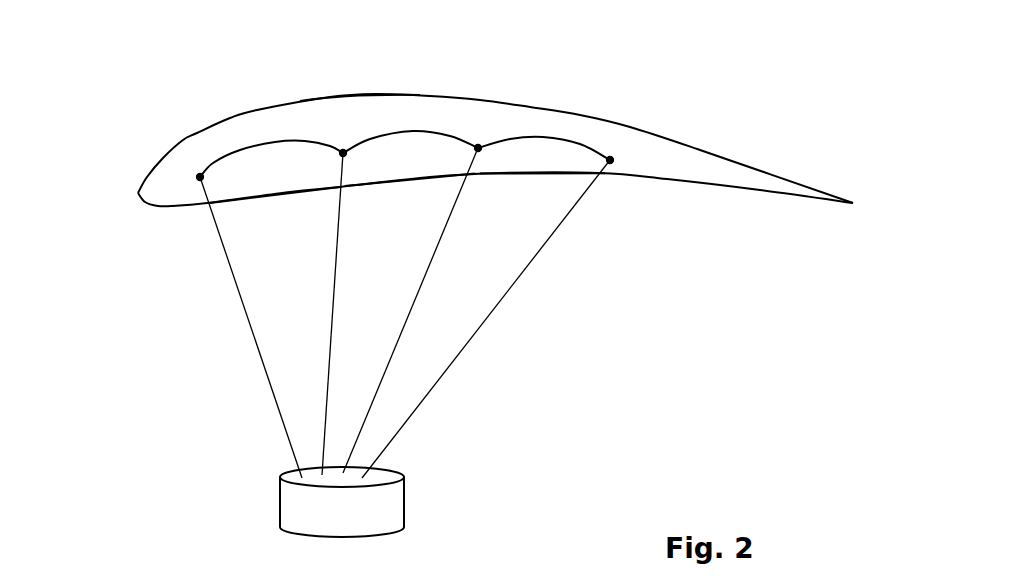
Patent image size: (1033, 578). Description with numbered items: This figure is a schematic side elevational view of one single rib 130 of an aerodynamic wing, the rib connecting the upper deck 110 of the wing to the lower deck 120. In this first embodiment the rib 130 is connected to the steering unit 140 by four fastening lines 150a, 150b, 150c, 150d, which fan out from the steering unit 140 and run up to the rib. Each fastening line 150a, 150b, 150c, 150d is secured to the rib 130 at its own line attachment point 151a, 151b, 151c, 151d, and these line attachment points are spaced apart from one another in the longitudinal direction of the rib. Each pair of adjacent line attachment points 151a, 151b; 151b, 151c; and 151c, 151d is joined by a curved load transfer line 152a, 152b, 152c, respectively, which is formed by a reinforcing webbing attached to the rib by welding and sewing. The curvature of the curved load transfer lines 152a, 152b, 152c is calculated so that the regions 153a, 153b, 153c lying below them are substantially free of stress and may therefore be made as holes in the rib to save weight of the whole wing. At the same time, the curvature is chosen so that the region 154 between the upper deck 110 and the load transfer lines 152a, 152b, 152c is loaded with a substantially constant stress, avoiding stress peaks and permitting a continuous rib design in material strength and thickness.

The upper deck 110 is at (668, 137).
The lower deck 120 is at (655, 180).
The rib 130 is at (463, 176).
The steering unit 140 is at (388, 507).
The fastening line 150a is at (247, 318).
The fastening line 150b is at (335, 270).
The fastening line 150c is at (422, 282).
The fastening line 150d is at (510, 287).
The line attachment point 151a is at (198, 176).
The line attachment point 151b is at (343, 152).
The line attachment point 151c is at (478, 143).
The line attachment point 151d is at (611, 158).
The curved load transfer line 152a is at (265, 142).
The curved load transfer line 152b is at (408, 130).
The curved load transfer line 152c is at (543, 137).
The region below curved load transfer line 153a is at (273, 172).
The region below curved load transfer line 153b is at (425, 163).
The region below curved load transfer line 153c is at (538, 163).
The cavity between upper surface and arch 154 is at (358, 120).